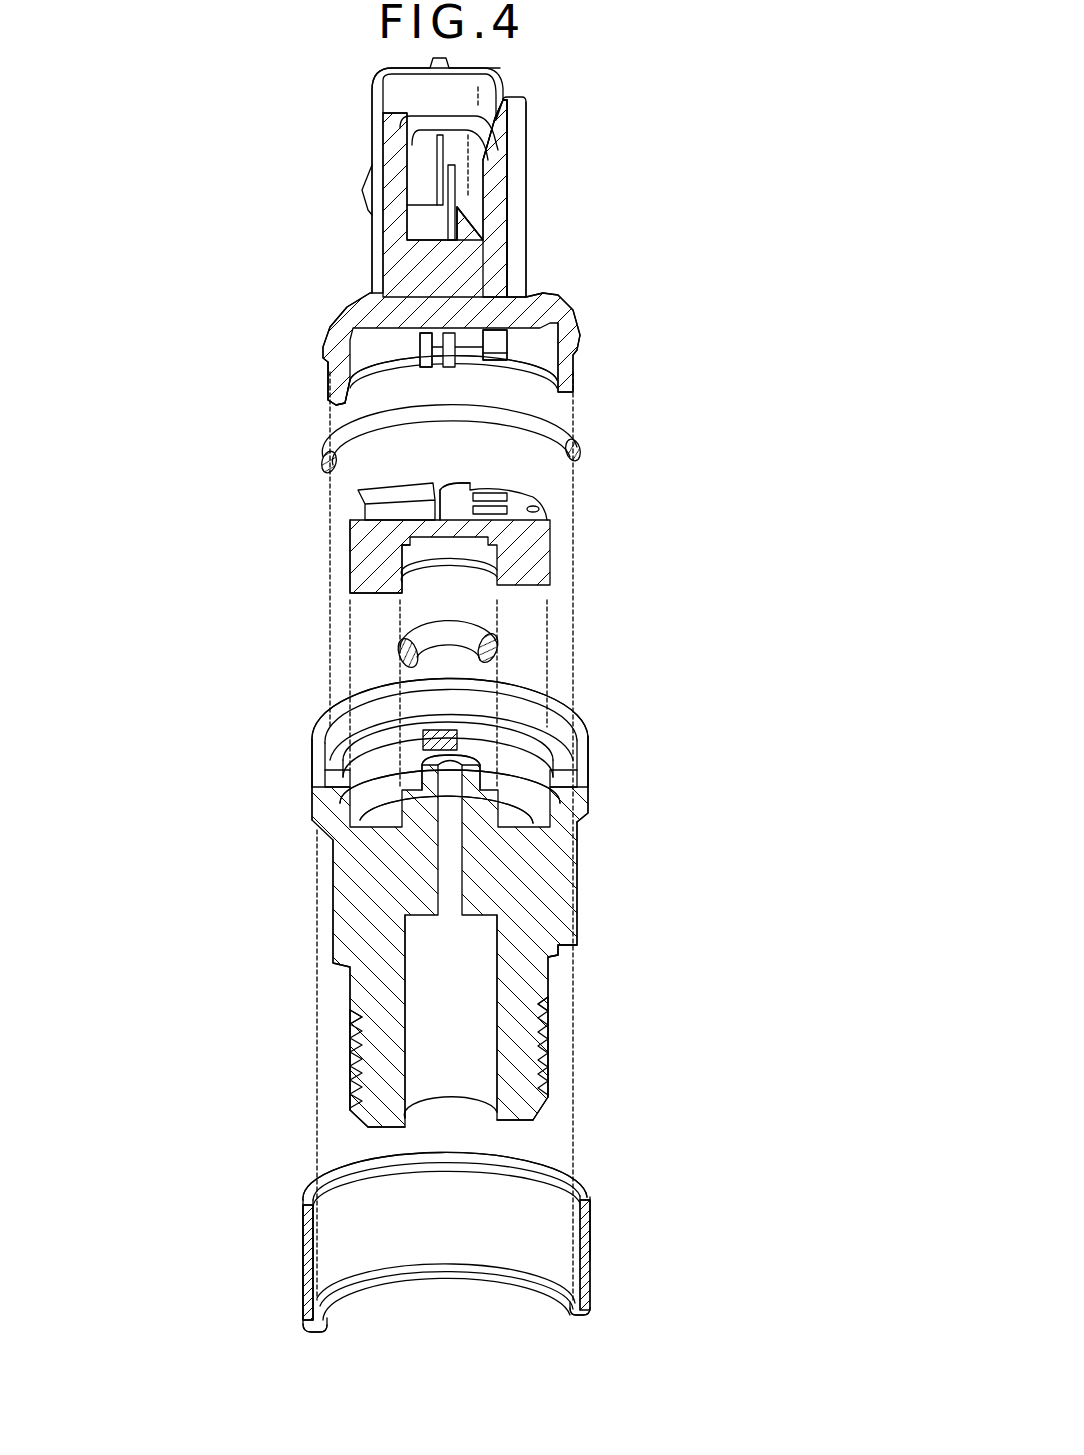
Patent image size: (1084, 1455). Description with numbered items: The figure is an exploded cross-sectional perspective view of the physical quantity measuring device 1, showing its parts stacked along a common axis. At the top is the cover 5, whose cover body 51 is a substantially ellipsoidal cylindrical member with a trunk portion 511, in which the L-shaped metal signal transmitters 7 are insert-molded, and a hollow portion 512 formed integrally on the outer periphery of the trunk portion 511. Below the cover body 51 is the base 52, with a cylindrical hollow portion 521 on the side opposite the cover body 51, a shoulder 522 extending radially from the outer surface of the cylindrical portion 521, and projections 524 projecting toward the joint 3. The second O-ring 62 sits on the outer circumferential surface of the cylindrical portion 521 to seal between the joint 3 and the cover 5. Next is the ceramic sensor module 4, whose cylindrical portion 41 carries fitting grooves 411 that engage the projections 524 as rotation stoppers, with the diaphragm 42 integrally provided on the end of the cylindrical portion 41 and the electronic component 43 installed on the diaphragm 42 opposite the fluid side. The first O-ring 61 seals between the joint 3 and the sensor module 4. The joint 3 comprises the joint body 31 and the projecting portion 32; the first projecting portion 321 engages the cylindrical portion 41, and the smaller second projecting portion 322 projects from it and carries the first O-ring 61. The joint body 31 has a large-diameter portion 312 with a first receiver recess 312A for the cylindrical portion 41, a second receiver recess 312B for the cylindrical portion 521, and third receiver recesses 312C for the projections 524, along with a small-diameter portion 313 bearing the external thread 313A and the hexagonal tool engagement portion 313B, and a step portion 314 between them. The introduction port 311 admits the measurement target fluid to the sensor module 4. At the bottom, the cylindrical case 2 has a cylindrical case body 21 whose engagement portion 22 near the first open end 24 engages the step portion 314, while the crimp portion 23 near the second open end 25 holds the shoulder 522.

The physical quantity measuring device 1 is at (773, 153).
The cylindrical case 2 is at (596, 1246).
The cylindrical case body 21 is at (303, 1272).
The engagement portion 22 is at (576, 1320).
The crimp portion 23 is at (592, 1196).
The first open end 24 is at (352, 1302).
The second open end 25 is at (345, 1165).
The joint 3 is at (572, 886).
The joint body 31 is at (336, 962).
The introduction port 311 is at (485, 1112).
The large-diameter portion 312 is at (592, 776).
The first receiver recess 312A is at (530, 782).
The second receiver recess 312B is at (570, 722).
The third receiver recess 312C is at (455, 738).
The small-diameter portion 313 is at (697, 957).
The external thread 313A is at (555, 1042).
The tool engagement portion 313B is at (565, 925).
The step portion 314 is at (585, 812).
The projecting portion 32 is at (222, 748).
The first projecting portion 321 is at (330, 808).
The second projecting portion 322 is at (330, 772).
The sensor module 4 is at (550, 553).
The cylindrical portion 41 is at (350, 556).
The fitting groove 411 is at (450, 488).
The diaphragm 42 is at (545, 500).
The electronic component 43 is at (370, 500).
The cover 5 is at (535, 128).
The cover body 51 is at (640, 178).
The trunk portion 511 is at (505, 242).
The hollow portion 512 is at (510, 212).
The base 52 is at (555, 305).
The cylindrical portion 521 is at (340, 386).
The shoulder 522 is at (572, 330).
The projection 524 is at (348, 405).
The first O-ring 61 is at (462, 625).
The second O-ring 62 is at (582, 440).
The signal transmitter 7 is at (445, 205).